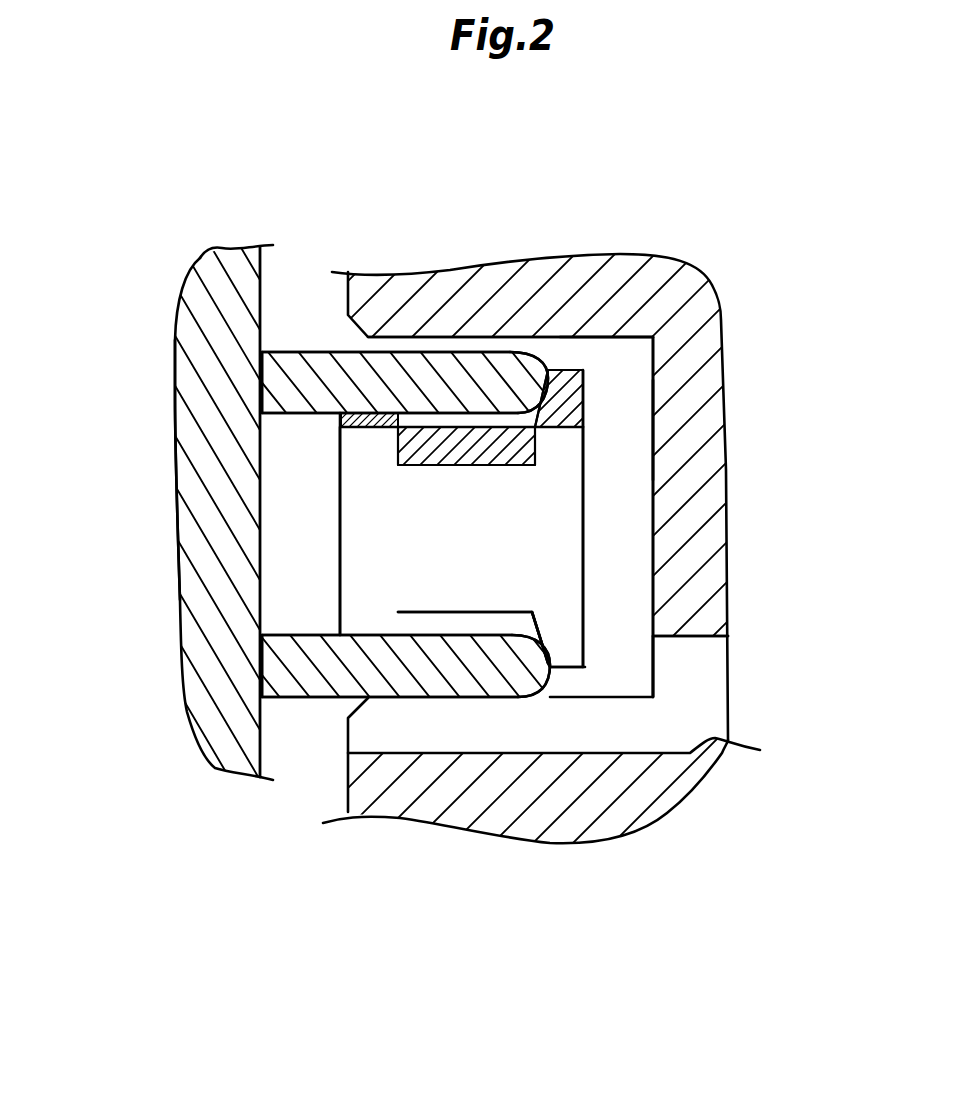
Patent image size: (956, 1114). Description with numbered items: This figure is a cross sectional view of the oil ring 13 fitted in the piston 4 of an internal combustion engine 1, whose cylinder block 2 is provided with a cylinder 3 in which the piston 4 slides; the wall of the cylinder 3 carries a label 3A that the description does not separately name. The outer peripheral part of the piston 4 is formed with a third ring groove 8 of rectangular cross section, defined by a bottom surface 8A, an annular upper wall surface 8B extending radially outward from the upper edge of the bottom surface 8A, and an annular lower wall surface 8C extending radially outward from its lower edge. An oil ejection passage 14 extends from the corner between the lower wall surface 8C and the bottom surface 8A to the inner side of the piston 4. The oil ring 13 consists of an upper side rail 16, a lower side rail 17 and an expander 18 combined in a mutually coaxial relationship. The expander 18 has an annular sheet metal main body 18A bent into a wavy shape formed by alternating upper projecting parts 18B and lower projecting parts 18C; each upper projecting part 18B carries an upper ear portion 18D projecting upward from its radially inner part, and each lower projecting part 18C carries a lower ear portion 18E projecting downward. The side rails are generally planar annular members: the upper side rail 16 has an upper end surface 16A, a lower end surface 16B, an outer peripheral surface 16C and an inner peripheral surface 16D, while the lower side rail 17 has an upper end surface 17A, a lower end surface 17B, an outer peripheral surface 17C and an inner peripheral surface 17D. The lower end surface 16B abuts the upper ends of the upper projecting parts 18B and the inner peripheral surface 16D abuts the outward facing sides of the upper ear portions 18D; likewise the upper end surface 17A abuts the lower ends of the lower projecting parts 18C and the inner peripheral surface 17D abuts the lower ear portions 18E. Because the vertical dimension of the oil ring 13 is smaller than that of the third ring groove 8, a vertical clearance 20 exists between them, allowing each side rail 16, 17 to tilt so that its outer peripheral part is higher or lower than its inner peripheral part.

The internal combustion engine 1 is at (213, 199).
The cylinder block 2 is at (197, 516).
The cylinder 3 is at (272, 258).
The wall sealing surface 3A is at (265, 337).
The piston 4 is at (680, 258).
The third ring groove 8 is at (653, 484).
The bottom surface 8A is at (653, 446).
The upper wall surface 8B is at (637, 338).
The lower wall surface 8C is at (640, 695).
The oil ring 13 is at (301, 568).
The oil ejection passage 14 is at (725, 740).
The upper side rail 16 is at (296, 416).
The upper end surface 16A is at (308, 350).
The lower end surface 16B is at (325, 418).
The outer peripheral surface 16C is at (262, 378).
The inner peripheral surface 16D is at (549, 372).
The lower side rail 17 is at (325, 698).
The upper end surface 17A is at (288, 635).
The lower end surface 17B is at (285, 698).
The outer peripheral surface 17C is at (261, 662).
The inner peripheral surface 17D is at (550, 697).
The expander 18 is at (586, 598).
The expander main body 18A is at (567, 500).
The upper projecting parts 18B is at (341, 432).
The lower projecting parts 18C is at (398, 612).
The upper ear portion 18D is at (582, 386).
The lower ear portion 18E is at (573, 646).
The vertical clearance 20 is at (435, 343).